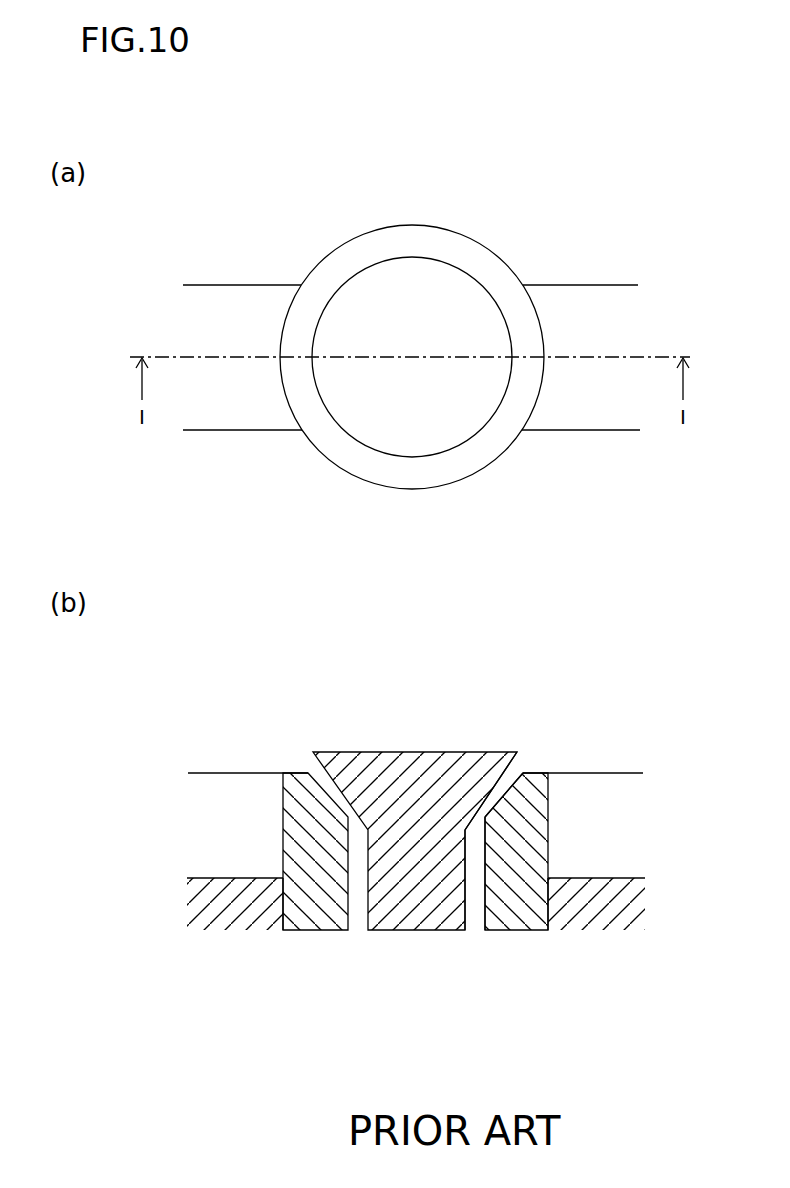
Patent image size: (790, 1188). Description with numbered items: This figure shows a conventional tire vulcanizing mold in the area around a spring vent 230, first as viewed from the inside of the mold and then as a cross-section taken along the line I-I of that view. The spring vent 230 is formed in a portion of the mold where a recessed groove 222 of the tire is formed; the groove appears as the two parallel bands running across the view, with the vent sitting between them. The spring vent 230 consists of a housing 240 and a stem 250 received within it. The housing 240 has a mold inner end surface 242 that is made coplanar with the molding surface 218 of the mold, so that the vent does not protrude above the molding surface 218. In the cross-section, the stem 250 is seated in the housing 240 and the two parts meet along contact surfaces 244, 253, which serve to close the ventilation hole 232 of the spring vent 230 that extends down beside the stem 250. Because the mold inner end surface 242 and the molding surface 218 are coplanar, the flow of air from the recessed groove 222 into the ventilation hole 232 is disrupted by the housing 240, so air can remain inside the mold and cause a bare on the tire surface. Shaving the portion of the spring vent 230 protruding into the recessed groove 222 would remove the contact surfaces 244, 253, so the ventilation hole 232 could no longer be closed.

The molding surface 218 is at (381, 199).
The recessed groove 222 is at (191, 402).
The spring vent 230 is at (226, 228).
The housing 240 is at (327, 278).
The mold inner end surface 242 is at (485, 265).
The stem 250 is at (387, 280).
The ventilation hole 232 is at (475, 913).
The contact surface 244 is at (480, 815).
The contact surface 253 is at (505, 783).